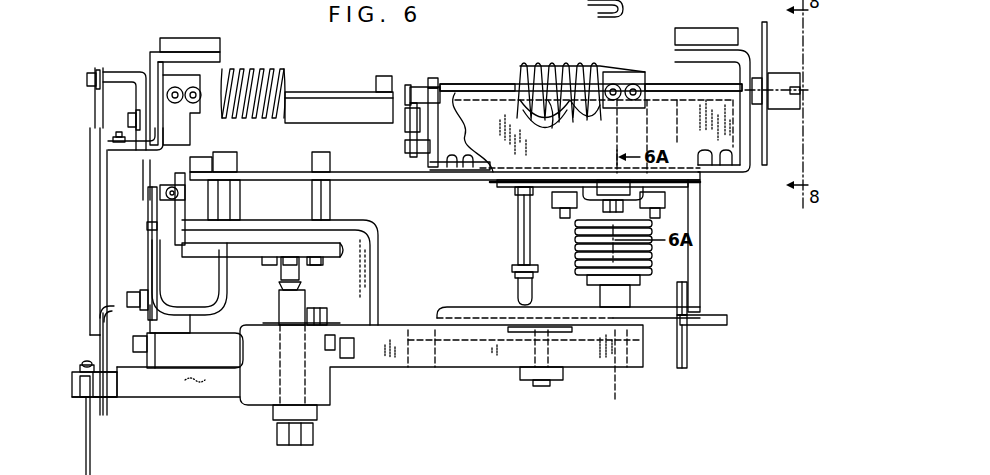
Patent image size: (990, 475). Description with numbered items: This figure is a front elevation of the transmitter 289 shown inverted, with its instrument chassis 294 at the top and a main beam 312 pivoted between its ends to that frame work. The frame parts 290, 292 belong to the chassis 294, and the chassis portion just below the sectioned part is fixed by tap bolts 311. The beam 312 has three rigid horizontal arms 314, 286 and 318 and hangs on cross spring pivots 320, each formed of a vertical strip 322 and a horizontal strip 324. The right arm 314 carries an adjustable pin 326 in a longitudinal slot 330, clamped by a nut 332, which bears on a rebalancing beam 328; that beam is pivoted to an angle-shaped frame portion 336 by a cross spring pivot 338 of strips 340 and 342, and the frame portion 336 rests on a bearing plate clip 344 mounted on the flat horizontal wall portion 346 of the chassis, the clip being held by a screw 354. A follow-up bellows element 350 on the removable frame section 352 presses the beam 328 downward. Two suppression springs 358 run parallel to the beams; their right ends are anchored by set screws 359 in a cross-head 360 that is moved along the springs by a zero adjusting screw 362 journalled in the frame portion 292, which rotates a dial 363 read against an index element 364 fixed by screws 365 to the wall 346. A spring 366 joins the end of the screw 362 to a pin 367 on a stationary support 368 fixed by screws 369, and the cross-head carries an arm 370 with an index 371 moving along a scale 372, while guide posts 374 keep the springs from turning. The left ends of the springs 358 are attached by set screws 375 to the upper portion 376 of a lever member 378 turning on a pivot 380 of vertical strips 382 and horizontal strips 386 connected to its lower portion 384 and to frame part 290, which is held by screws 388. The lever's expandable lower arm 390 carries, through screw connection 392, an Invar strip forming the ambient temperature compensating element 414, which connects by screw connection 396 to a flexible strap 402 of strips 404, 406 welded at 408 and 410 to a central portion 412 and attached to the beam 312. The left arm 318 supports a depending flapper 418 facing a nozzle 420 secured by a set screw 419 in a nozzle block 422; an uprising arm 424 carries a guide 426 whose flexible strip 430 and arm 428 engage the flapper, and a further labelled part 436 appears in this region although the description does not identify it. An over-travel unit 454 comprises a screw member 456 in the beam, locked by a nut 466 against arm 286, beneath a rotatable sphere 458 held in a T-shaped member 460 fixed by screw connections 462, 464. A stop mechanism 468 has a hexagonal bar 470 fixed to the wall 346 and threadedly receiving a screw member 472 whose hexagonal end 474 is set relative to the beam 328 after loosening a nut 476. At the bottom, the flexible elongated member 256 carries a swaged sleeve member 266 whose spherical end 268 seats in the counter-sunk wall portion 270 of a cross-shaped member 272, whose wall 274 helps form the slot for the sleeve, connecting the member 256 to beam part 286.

The flexible elongated member 256 is at (86, 455).
The sleeve member 266 is at (104, 400).
The partial spherical-shaped configuration 268 is at (88, 362).
The grooved-out wall portion 270 is at (106, 372).
The cross-shaped member 272 is at (79, 370).
The wall of cross-shaped member 274 is at (82, 400).
The beam arm 286 is at (205, 390).
The transmitter 289 is at (442, 375).
The frame part 290 is at (160, 52).
The transverse vertical frame portion 292 is at (738, 50).
The instrument chassis 294 is at (347, 203).
The tap bolts 311 is at (322, 158).
The main beam 312 is at (355, 370).
The beam arm 314 is at (420, 370).
The beam arm 318 is at (172, 375).
The cross spring type pivot 320 is at (345, 312).
The vertical strip 322 is at (343, 318).
The horizontal strip 324 is at (357, 358).
The adjustable pin 326 is at (543, 387).
The rebalancing beam 328 is at (446, 312).
The longitudinal slot 330 is at (631, 374).
The nut 332 is at (520, 372).
The frame portion 336 is at (700, 245).
The cross spring type pivot 338 is at (689, 327).
The spring strip 340 is at (676, 330).
The spring strip 342 is at (678, 298).
The bearing plate clip 344 is at (518, 190).
The flat horizontal wall portion 346 is at (440, 183).
The rebalancing bellows element 350 is at (573, 260).
The removable frame work section 352 is at (561, 203).
The screw 354 is at (660, 205).
The suppression springs 358 is at (273, 72).
The set screws 359 is at (640, 84).
The cross-head 360 is at (607, 72).
The zero adjusting screw 362 is at (474, 85).
The dial 363 is at (767, 50).
The index element 364 is at (753, 178).
The screws 365 is at (708, 150).
The spring 366 is at (405, 127).
The pin 367 is at (405, 150).
The stationary support 368 is at (433, 78).
The screws 369 is at (466, 155).
The arm 370 is at (557, 63).
The index 371 is at (570, 121).
The scale 372 is at (530, 112).
The guide elements 374 is at (618, 143).
The set screws 375 is at (173, 78).
The upper portion of lever member 376 is at (200, 80).
The lever member 378 is at (190, 135).
The pivot 380 is at (143, 172).
The vertical spring strips 382 is at (160, 190).
The lower portion of lever member 384 is at (212, 162).
The horizontal spring strips 386 is at (140, 168).
The screws 388 is at (130, 118).
The lower arm 390 is at (302, 110).
The screw connection 392 is at (385, 76).
The screw connection 396 is at (88, 80).
The flexible strap 402 is at (90, 263).
The stainless steel strip 404 is at (150, 343).
The stainless steel strip 406 is at (100, 112).
The spot welding material 408 is at (160, 130).
The spot welding material 410 is at (100, 312).
The central stainless steel portion 412 is at (95, 213).
The ambient temperature compensating element 414 is at (348, 97).
The flapper 418 is at (149, 216).
The set screw 419 is at (158, 197).
The nozzle 420 is at (153, 262).
The nozzle block 422 is at (182, 200).
The uprising arm portion 424 is at (210, 292).
The guide 426 is at (128, 288).
The arm 428 is at (147, 228).
The flexible strip 430 is at (100, 262).
The block 436 is at (151, 320).
The over-travel unit 454 is at (336, 410).
The screw member 456 is at (277, 432).
The rotatable sphere 458 is at (290, 280).
The T-shaped member 460 is at (285, 283).
The screw connection 462 is at (255, 245).
The screw connection 464 is at (340, 250).
The nut 466 is at (275, 412).
The stop mechanism 468 is at (515, 246).
The hexagonal bar 470 is at (517, 232).
The screw member 472 is at (514, 276).
The hexagonal bar 474 is at (517, 298).
The nut 476 is at (511, 268).